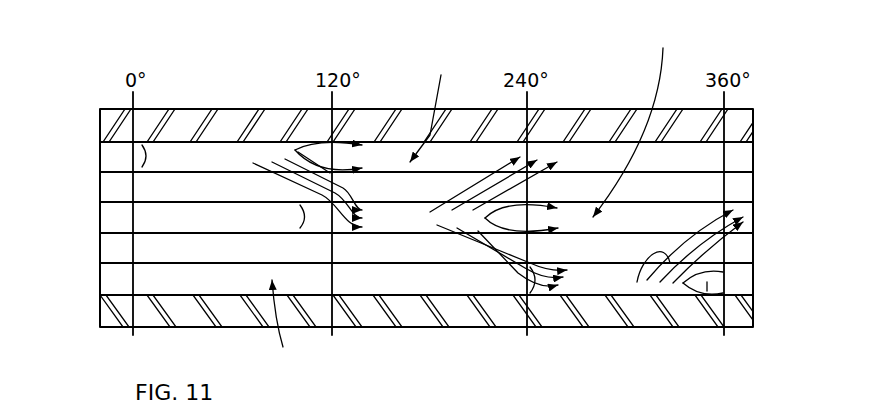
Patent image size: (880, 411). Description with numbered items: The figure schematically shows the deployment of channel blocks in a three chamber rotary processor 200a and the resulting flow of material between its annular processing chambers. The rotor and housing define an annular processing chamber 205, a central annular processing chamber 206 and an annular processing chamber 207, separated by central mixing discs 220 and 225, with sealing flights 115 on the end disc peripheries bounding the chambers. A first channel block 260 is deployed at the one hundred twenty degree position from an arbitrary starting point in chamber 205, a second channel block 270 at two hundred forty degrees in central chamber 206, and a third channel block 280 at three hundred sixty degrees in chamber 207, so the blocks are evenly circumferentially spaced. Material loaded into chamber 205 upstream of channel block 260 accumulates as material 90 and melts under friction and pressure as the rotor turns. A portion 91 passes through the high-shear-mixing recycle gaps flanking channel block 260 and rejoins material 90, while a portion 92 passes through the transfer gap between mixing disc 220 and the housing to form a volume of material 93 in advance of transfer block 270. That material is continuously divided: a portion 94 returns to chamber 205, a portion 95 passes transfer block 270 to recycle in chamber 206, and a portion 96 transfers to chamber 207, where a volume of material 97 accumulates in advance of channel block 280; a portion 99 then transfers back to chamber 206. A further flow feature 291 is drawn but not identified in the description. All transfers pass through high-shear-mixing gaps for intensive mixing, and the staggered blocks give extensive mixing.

The three chamber rotary processor 200a is at (232, 40).
The sealing flights 115 is at (110, 108).
The material 90 is at (186, 152).
The first channel block 260 is at (295, 148).
The portion p1 of material 91 is at (350, 142).
The portion p2 of material 92 is at (337, 202).
The volume V2 of material 93 is at (393, 215).
The annular processing chamber 205 is at (444, 108).
The annular processing chamber 207 is at (286, 285).
The central mixing disc 225 is at (237, 250).
The second channel block 270 is at (485, 218).
The portion p3 of material 94 is at (530, 172).
The portion p4 of material 95 is at (548, 206).
The portion p5 of material 96 is at (483, 250).
The flow boundary 291 is at (527, 262).
The central annular processing chamber 206 is at (638, 121).
The central mixing disc 220 is at (665, 182).
The volume V3 of material 97 is at (610, 281).
The portion p7 of material 99 is at (638, 282).
The third channel block 280 is at (707, 289).